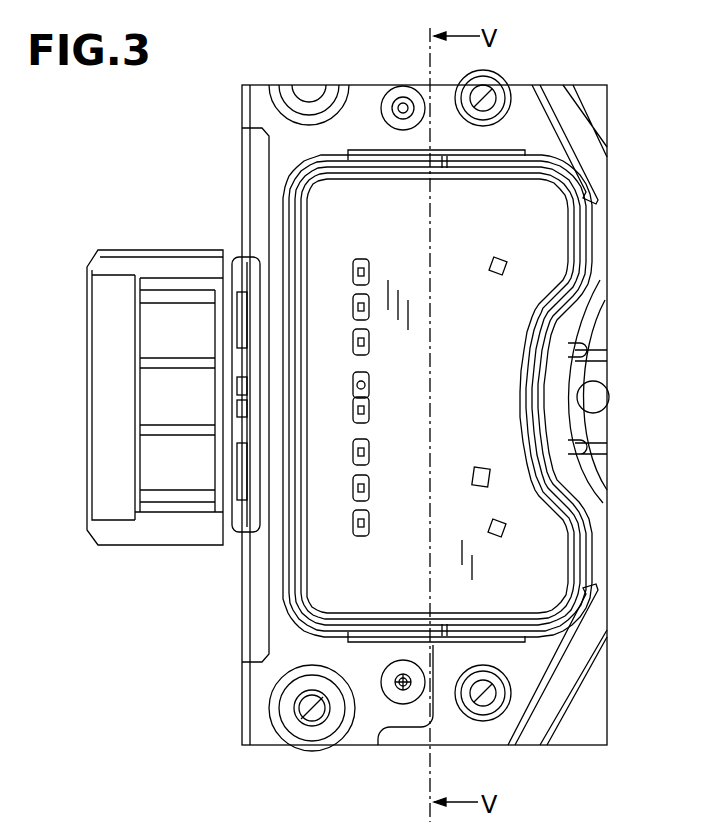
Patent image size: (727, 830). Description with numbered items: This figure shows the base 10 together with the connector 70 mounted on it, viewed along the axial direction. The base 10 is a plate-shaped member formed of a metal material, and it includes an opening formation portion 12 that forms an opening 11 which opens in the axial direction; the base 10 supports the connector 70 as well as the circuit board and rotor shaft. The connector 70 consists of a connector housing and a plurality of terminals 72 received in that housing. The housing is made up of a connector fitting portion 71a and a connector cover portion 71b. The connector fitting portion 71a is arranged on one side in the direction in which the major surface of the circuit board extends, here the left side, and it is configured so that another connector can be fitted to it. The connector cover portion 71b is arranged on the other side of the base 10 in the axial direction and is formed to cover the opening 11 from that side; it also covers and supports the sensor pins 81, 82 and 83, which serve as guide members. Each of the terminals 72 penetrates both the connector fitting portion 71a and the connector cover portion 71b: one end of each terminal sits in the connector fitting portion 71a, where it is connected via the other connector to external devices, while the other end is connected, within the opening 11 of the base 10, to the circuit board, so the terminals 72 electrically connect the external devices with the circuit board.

The base 10 is at (347, 748).
The opening 11 is at (512, 235).
The opening formation portion 12 is at (325, 192).
The connector 70 is at (109, 547).
The connector fitting portion 71a is at (168, 530).
The connector cover portion 71b is at (385, 234).
The terminals 72 is at (353, 410).
The sensor pin 81 is at (508, 530).
The sensor pin 82 is at (490, 475).
The sensor pin 83 is at (508, 270).